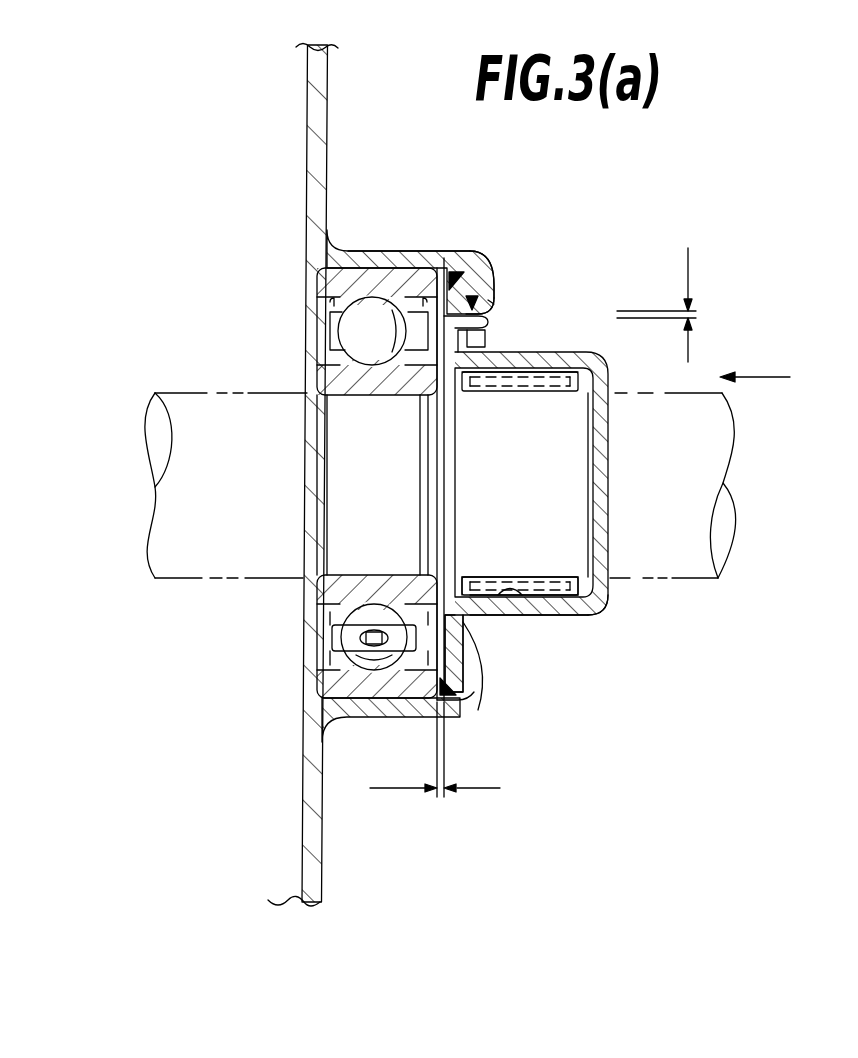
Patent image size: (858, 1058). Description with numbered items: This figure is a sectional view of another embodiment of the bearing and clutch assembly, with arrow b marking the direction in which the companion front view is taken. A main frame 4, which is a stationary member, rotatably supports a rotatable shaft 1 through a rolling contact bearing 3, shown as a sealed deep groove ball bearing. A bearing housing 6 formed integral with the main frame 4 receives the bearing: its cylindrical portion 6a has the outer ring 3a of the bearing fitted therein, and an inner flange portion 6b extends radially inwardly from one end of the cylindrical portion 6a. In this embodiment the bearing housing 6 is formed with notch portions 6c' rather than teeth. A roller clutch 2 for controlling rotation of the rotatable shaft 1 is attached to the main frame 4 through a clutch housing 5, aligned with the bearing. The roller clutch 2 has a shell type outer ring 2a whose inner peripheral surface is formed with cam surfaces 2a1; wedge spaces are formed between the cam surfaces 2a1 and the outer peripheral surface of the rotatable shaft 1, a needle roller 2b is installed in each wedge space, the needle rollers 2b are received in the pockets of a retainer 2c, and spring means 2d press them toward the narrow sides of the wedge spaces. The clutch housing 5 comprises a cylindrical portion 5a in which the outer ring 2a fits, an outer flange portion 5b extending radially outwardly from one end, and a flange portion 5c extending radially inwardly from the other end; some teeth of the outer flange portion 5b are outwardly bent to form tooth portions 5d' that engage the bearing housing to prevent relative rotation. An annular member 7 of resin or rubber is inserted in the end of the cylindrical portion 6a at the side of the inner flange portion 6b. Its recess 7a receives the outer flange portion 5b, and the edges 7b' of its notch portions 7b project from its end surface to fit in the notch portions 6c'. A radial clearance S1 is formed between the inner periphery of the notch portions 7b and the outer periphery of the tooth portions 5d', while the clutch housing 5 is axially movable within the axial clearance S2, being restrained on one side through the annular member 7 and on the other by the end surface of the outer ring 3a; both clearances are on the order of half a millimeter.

The rotatable shaft 1 is at (180, 391).
The roller clutch 2 is at (565, 527).
The shell type outer ring 2a is at (518, 579).
The cam surfaces 2a1 is at (522, 598).
The needle roller 2b is at (480, 577).
The retainer 2c is at (576, 582).
The spring means 2d is at (516, 393).
The rolling contact bearing 3 is at (250, 306).
The outer ring 3a is at (306, 278).
The main frame 4 is at (325, 90).
The clutch housing 5 is at (565, 537).
The cylindrical portion 5a is at (550, 618).
The outer flange portion 5b is at (467, 668).
The flange portion 5c is at (612, 600).
The tooth portions 5d' is at (518, 339).
The bearing housing 6 is at (443, 228).
The cylindrical portion 6a is at (367, 262).
The inner flange portion 6b is at (488, 283).
The notch portions 6c' is at (513, 273).
The annular member 7 is at (522, 482).
The recess 7a is at (456, 704).
The notch portions 7b is at (520, 310).
The edges 7b' is at (548, 279).
The radial clearance S1 is at (673, 305).
The axial clearance S2 is at (431, 749).
The arrow b is at (767, 379).